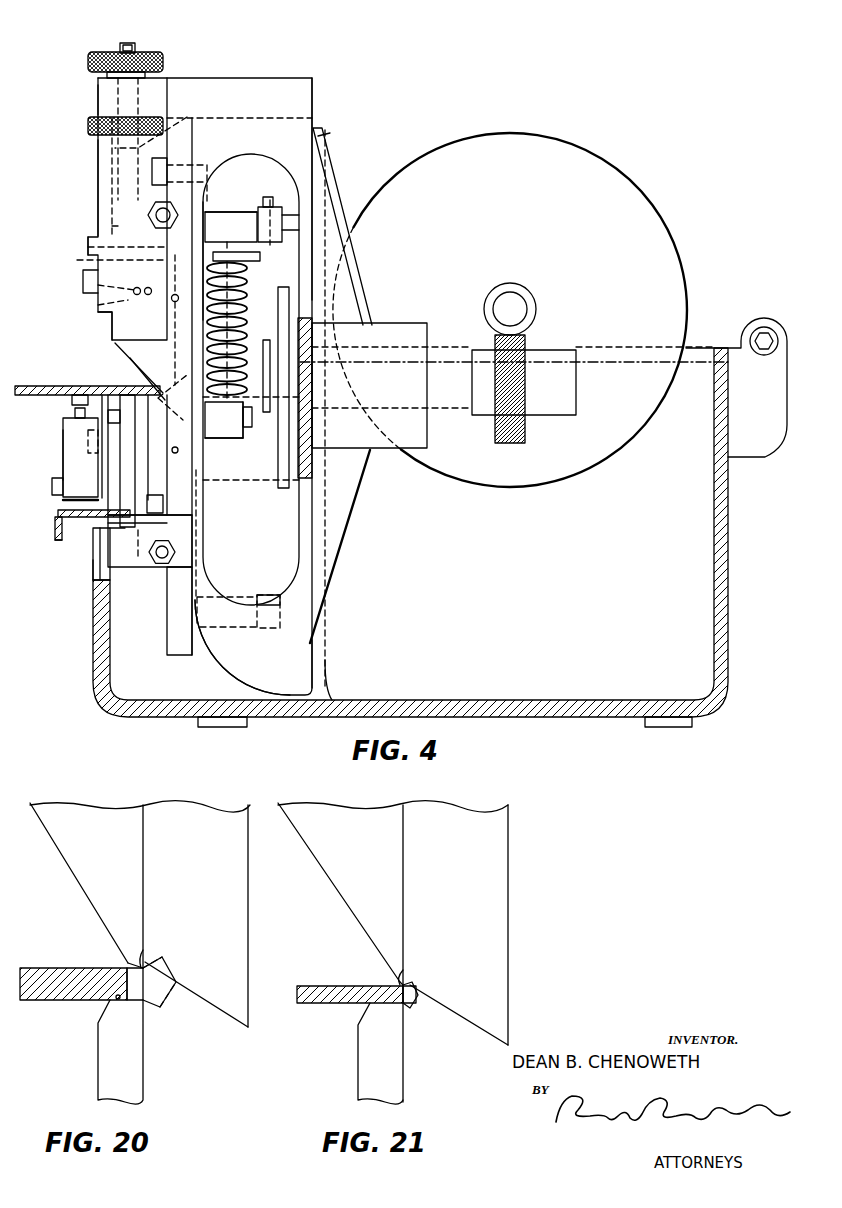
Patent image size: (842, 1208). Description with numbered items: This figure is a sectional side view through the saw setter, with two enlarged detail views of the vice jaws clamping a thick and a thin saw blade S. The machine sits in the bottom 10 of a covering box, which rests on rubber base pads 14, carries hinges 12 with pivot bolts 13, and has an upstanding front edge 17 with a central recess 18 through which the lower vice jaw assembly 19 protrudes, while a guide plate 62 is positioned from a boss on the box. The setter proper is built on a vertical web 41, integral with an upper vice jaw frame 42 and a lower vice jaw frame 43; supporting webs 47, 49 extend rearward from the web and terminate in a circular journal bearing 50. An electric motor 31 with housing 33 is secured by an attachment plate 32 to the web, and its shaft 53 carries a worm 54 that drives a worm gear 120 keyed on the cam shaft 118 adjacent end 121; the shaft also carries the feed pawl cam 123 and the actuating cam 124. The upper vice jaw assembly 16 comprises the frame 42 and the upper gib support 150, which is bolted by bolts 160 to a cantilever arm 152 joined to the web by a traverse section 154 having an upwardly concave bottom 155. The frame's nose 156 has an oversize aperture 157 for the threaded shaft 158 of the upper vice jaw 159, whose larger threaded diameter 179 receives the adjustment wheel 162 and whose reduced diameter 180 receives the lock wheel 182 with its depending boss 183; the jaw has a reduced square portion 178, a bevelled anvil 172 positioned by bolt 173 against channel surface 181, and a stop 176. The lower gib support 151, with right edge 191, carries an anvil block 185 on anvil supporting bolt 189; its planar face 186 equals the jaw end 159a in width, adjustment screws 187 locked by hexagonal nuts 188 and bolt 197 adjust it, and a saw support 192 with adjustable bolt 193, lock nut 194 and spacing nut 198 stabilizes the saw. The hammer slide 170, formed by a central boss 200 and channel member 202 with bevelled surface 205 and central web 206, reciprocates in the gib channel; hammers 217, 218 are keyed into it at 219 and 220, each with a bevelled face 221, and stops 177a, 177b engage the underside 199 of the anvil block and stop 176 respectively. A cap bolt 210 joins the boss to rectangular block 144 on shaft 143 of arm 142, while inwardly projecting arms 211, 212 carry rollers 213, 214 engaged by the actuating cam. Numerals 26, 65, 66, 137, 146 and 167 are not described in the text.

In FIG. 4, the bottom 10 is at (410, 550).
In FIG. 4, the hinges 12 is at (736, 373).
In FIG. 4, the pivot bolts 13 is at (766, 322).
In FIG. 4, the base pads 14 is at (445, 736).
In FIG. 4, the upper vice jaw assembly 16 is at (99, 209).
In FIG. 4, the upstanding edge 17 is at (88, 554).
In FIG. 4, the central recess 18 is at (80, 583).
In FIG. 4, the lower vice jaw assembly 19 is at (72, 554).
In FIG. 4, the plate 26 is at (342, 415).
In FIG. 4, the electric motor 31 is at (510, 310).
In FIG. 4, the attachment plate 32 is at (338, 125).
In FIG. 4, the housing 33 is at (574, 122).
In FIG. 4, the vertical web 41 is at (332, 189).
In FIG. 4, the upper vice jaw frame 42 is at (205, 366).
In FIG. 4, the lower vice jaw frame 43 is at (242, 673).
In FIG. 4, the supporting web 47 is at (358, 226).
In FIG. 4, the supporting web 49 is at (341, 546).
In FIG. 4, the circular journal bearing 50 is at (378, 367).
In FIG. 4, the shaft 53 is at (525, 306).
In FIG. 4, the worm 54 is at (523, 286).
In FIG. 4, the guide plate 62 is at (41, 527).
In FIG. 4, the flange 65 is at (87, 509).
In FIG. 4, the flange 66 is at (41, 540).
In FIG. 4, the cam shaft 118 is at (514, 400).
In FIG. 4, the worm gear 120 is at (535, 381).
In FIG. 4, the end 121 is at (543, 382).
In FIG. 4, the feed pawl cam 123 is at (275, 403).
In FIG. 4, the actuating cam 124 is at (267, 207).
In FIG. 4, the cap 137 is at (231, 225).
In FIG. 4, the arm 142 is at (259, 431).
In FIG. 4, the shaft 143 is at (278, 333).
In FIG. 4, the rectangular block 144 is at (233, 456).
In FIG. 4, the spring 146 is at (233, 310).
In FIG. 4, the upper gib support 150 is at (73, 188).
In FIG. 4, the lower gib support 151 is at (129, 526).
In FIG. 4, the cantilever arm 152 is at (223, 244).
In FIG. 4, the traverse section 154 is at (258, 355).
In FIG. 4, the upwardly concave bottom 155 is at (253, 372).
In FIG. 4, the nose 156 is at (77, 99).
In FIG. 4, the oversize aperture 157 is at (155, 139).
In FIG. 4, the threaded shaft 158 is at (129, 32).
In FIG. 4, the upper vice jaw 159 is at (116, 366).
In FIG. 20, the upper vice jaw 159 is at (84, 927).
In FIG. 21, the upper vice jaw 159 is at (347, 946).
In FIG. 20, the end 159a is at (164, 936).
In FIG. 21, the end 159a is at (424, 968).
In FIG. 4, the bolts 160 is at (166, 227).
In FIG. 4, the upper vice jaw adjustment wheel 162 is at (109, 122).
In FIG. 4, the nut 167 is at (114, 215).
In FIG. 4, the hammer slide 170 is at (179, 629).
In FIG. 4, the bevelled anvil 172 is at (125, 377).
In FIG. 20, the bevelled anvil 172 is at (79, 883).
In FIG. 21, the bevelled anvil 172 is at (339, 892).
In FIG. 4, the bolt 173 is at (74, 279).
In FIG. 4, the stop 176 is at (91, 309).
In FIG. 4, the limit stop 177a is at (145, 562).
In FIG. 4, the integral projection 177b is at (89, 296).
In FIG. 4, the portion of reduced dimension 178 is at (85, 228).
In FIG. 4, the larger threaded diameter 179 is at (154, 123).
In FIG. 4, the portion of reduced diameter 180 is at (106, 41).
In FIG. 4, the channel surface 181 is at (78, 177).
In FIG. 4, the lock wheel 182 is at (136, 45).
In FIG. 4, the depending boss 183 is at (152, 62).
In FIG. 4, the anvil block 185 is at (84, 455).
In FIG. 20, the anvil block 185 is at (150, 1052).
In FIG. 21, the anvil block 185 is at (405, 1053).
In FIG. 4, the planar face 186 is at (132, 441).
In FIG. 20, the planar face 186 is at (123, 1003).
In FIG. 21, the planar face 186 is at (391, 1014).
In FIG. 4, the adjustment screws 187 is at (104, 409).
In FIG. 4, the hexagonal nuts 188 is at (98, 446).
In FIG. 4, the anvil supporting bolt 189 is at (64, 457).
In FIG. 4, the right edge 191 is at (91, 559).
In FIG. 4, the saw support 192 is at (42, 455).
In FIG. 4, the adjustable bolt 193 is at (60, 403).
In FIG. 4, the lock nut 194 is at (57, 415).
In FIG. 4, the bolt 197 is at (43, 485).
In FIG. 4, the spacing nut 198 is at (60, 498).
In FIG. 4, the underside 199 is at (138, 503).
In FIG. 4, the central boss 200 is at (223, 432).
In FIG. 4, the channel member 202 is at (249, 445).
In FIG. 4, the bevelled surface 205 is at (92, 326).
In FIG. 4, the central web 206 is at (218, 535).
In FIG. 4, the cap bolt 210 is at (263, 423).
In FIG. 4, the inwardly projecting arm 211 is at (227, 631).
In FIG. 4, the inwardly projecting arm 212 is at (231, 197).
In FIG. 4, the roller 213 is at (271, 631).
In FIG. 4, the roller 214 is at (325, 202).
In FIG. 4, the hammer 217 is at (105, 249).
In FIG. 20, the hammer 217 is at (195, 901).
In FIG. 21, the hammer 217 is at (478, 953).
In FIG. 4, the hammer 218 is at (150, 566).
In FIG. 4, the key location 219 is at (149, 320).
In FIG. 4, the key location 220 is at (200, 462).
In FIG. 4, the bevelled face 221 is at (156, 381).
In FIG. 20, the bevelled face 221 is at (195, 1003).
In FIG. 21, the bevelled face 221 is at (455, 1015).
In FIG. 4, the sheet S is at (87, 377).
In FIG. 20, the sheet S is at (73, 966).
In FIG. 21, the sheet S is at (350, 979).